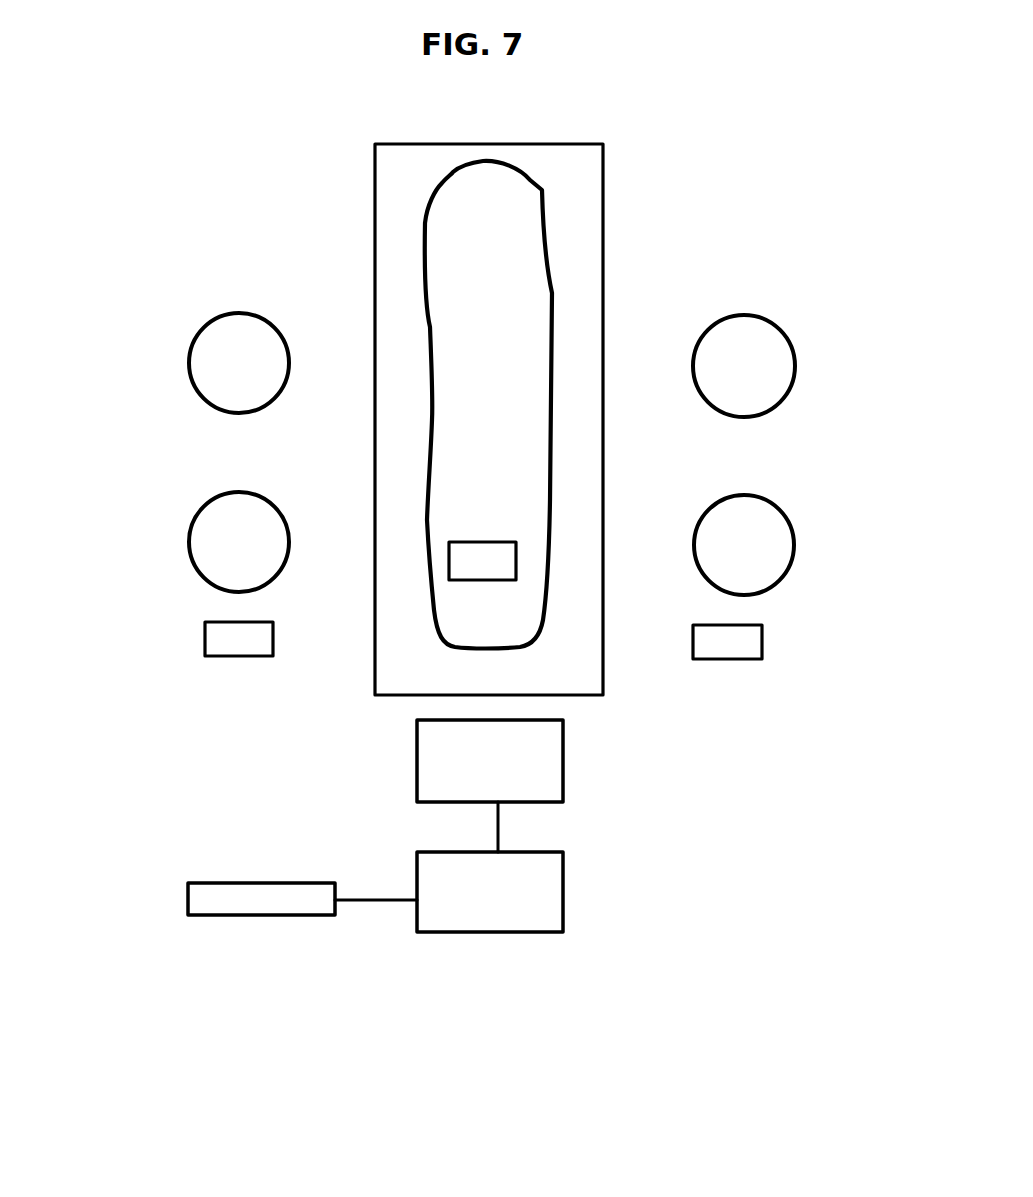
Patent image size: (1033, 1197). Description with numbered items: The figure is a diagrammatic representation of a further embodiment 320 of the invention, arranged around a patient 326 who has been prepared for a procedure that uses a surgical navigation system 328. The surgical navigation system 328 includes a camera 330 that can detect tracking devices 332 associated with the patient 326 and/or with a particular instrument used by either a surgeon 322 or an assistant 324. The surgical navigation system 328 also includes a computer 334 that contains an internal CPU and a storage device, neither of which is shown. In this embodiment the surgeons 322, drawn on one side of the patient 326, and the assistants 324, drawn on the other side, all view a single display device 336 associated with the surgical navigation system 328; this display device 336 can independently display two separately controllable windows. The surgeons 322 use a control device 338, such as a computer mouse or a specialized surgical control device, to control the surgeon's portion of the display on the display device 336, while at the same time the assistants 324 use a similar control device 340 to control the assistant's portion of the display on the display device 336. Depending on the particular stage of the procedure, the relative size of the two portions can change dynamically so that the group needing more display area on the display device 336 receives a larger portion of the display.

The further embodiment 320 is at (191, 723).
The surgeon 322 is at (197, 388).
The assistant 324 is at (777, 408).
The patient 326 is at (550, 292).
The surgical navigation system 328 is at (416, 1000).
The camera 330 is at (318, 917).
The tracking device 332 is at (440, 565).
The computer 334 is at (527, 938).
The display device 336 is at (413, 758).
The control device 338 is at (205, 643).
The control device 340 is at (762, 650).